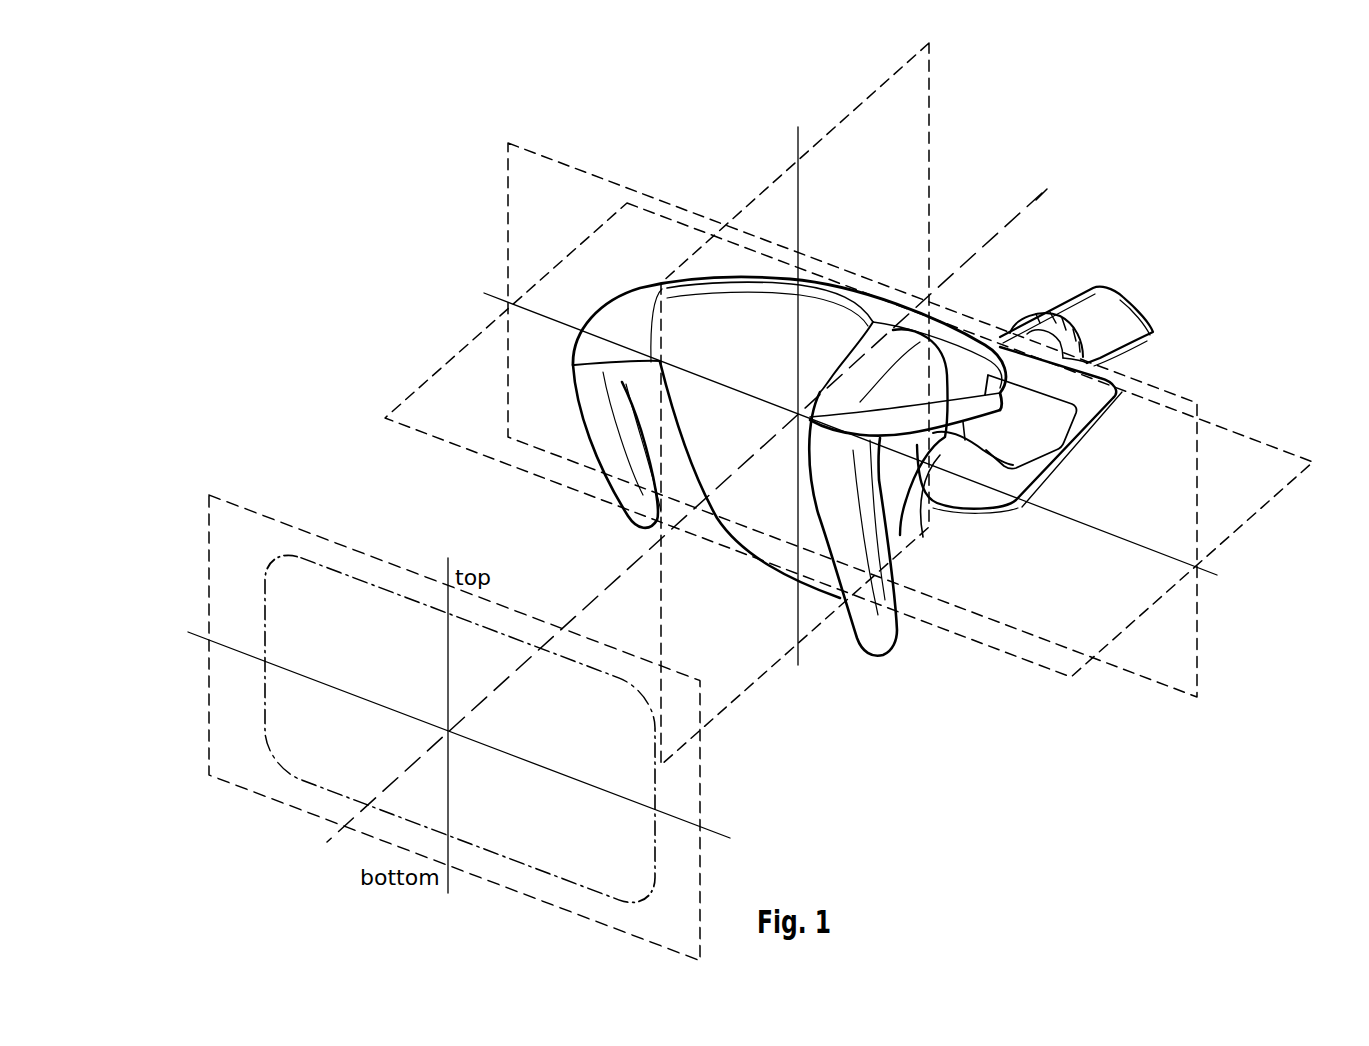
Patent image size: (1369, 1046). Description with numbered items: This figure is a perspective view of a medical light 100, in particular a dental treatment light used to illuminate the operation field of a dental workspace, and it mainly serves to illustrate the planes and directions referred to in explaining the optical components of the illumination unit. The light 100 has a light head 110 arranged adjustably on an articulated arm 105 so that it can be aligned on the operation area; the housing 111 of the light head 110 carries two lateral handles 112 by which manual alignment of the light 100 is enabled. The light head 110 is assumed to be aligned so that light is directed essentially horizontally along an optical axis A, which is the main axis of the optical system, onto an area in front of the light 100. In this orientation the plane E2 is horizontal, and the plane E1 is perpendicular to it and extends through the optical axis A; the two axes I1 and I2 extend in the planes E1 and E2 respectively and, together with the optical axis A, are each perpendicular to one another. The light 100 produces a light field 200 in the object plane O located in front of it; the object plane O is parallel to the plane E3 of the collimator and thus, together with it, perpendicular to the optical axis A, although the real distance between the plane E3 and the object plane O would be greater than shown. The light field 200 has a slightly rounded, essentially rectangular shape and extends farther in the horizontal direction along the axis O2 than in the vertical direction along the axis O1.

The medical light 100 is at (832, 453).
The articulated arm 105 is at (1081, 317).
The light head 110 is at (846, 286).
The housing 111 is at (666, 296).
The lateral handles 112 is at (897, 625).
The light field 200 is at (297, 780).
The plane E1 is at (758, 681).
The plane E2 is at (1277, 498).
The plane of the collimator E3 is at (508, 157).
The axis I1 is at (798, 128).
The axis I2 is at (1133, 539).
The optical axis A is at (1040, 196).
The object plane O is at (257, 511).
The axis O1 is at (449, 881).
The axis O2 is at (190, 633).